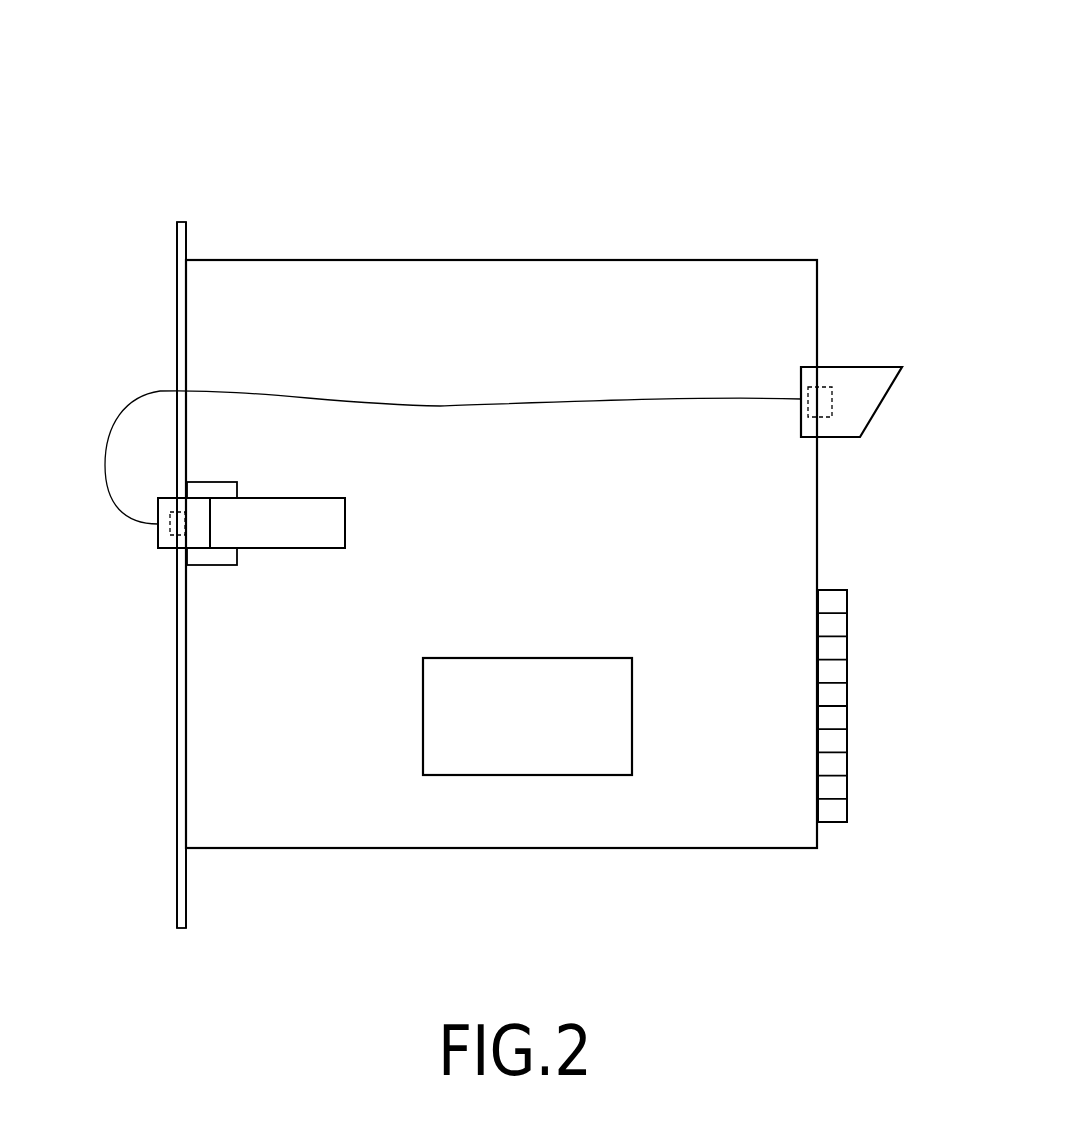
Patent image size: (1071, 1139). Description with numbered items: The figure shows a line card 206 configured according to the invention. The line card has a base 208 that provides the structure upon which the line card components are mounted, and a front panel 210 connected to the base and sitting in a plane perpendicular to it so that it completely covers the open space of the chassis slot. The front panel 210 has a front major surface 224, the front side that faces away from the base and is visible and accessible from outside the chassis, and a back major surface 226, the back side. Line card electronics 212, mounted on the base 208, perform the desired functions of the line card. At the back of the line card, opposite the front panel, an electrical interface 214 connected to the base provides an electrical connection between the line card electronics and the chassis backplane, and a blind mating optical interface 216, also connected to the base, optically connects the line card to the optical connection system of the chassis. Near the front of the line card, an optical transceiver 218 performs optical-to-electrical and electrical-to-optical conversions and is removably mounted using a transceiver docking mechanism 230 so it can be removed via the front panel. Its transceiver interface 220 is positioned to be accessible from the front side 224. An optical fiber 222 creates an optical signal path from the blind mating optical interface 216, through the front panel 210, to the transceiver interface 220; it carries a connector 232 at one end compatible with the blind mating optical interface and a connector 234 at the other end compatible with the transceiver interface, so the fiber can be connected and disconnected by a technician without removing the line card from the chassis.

The line card 206 is at (757, 80).
The base 208 is at (692, 259).
The front panel 210 is at (177, 332).
The line card electronics 212 is at (632, 712).
The electrical interface 214 is at (835, 590).
The blind mating optical interface 216 is at (862, 367).
The optical transceiver 218 is at (345, 522).
The transceiver interface 220 is at (160, 545).
The optical fiber 222 is at (495, 402).
The front major surface 224 is at (175, 228).
The back major surface 226 is at (190, 246).
The transceiver docking mechanism 230 is at (218, 482).
The connector 232 is at (822, 417).
The connector 234 is at (172, 537).